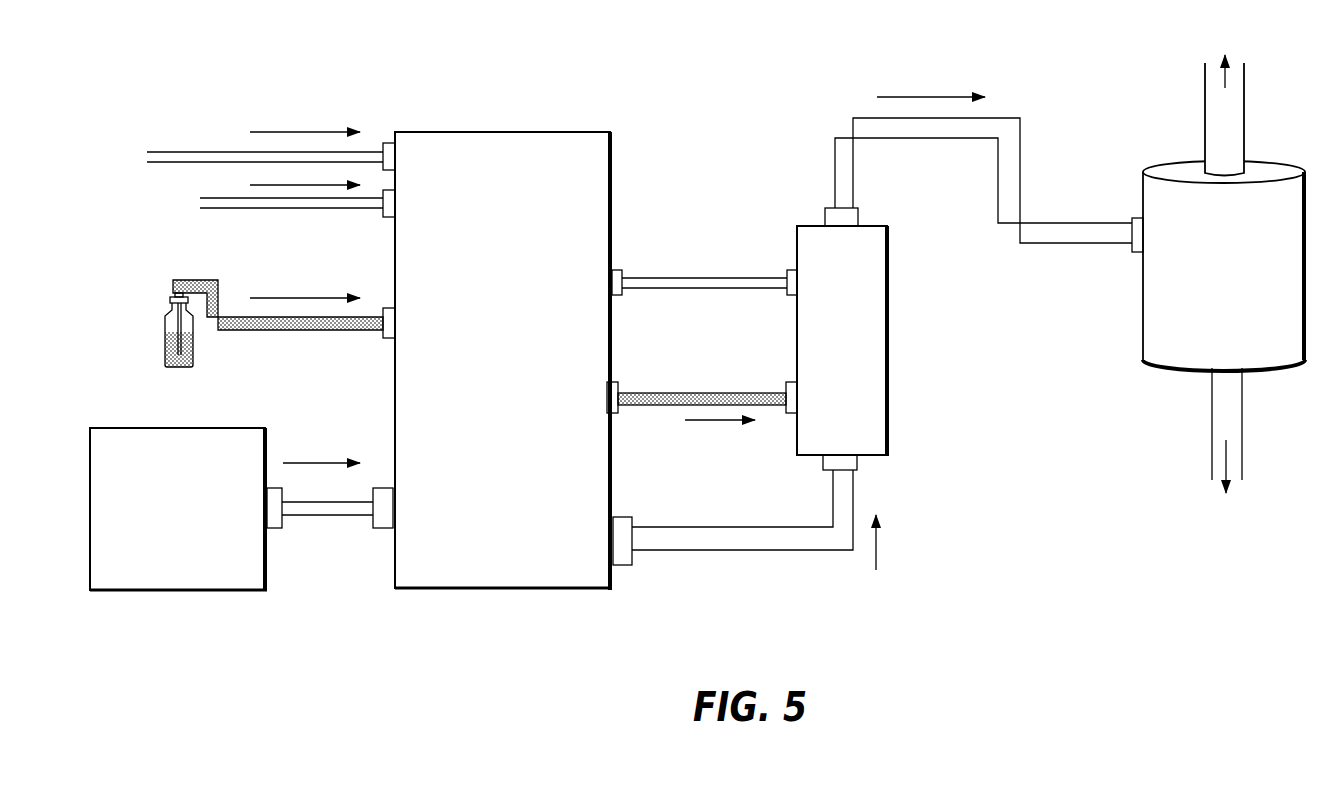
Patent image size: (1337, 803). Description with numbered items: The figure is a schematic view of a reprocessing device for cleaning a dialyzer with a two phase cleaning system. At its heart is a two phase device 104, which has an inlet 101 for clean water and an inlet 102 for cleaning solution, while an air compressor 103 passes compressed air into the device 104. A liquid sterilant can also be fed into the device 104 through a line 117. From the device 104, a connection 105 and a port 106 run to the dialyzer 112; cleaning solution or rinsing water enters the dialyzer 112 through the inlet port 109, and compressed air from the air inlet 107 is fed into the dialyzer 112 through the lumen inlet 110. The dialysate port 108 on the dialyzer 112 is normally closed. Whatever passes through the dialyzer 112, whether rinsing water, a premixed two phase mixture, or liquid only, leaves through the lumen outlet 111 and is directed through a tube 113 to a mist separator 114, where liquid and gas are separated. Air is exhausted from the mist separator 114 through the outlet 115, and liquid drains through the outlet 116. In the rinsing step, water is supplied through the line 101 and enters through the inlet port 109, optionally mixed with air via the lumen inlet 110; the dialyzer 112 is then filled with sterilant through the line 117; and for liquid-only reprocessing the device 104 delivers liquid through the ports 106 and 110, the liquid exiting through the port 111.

The inlet for clean water 101 is at (183, 152).
The sterilant line 117 is at (207, 197).
The inlet for cleaning solution 102 is at (173, 287).
The air compressor 103 is at (177, 590).
The two phase device 104 is at (533, 132).
The gas conduit 105 is at (667, 278).
The port 106 is at (698, 398).
The air inlet 107 is at (697, 550).
The dialysate port 108 is at (792, 270).
The inlet port 109 is at (792, 382).
The lumen inlet 110 is at (860, 462).
The lumen outlet 111 is at (858, 214).
The dialyzer 112 is at (878, 368).
The tube 113 is at (1052, 223).
The mist separator 114 is at (1148, 320).
The air outlet 115 is at (1208, 102).
The liquid outlet 116 is at (1213, 402).